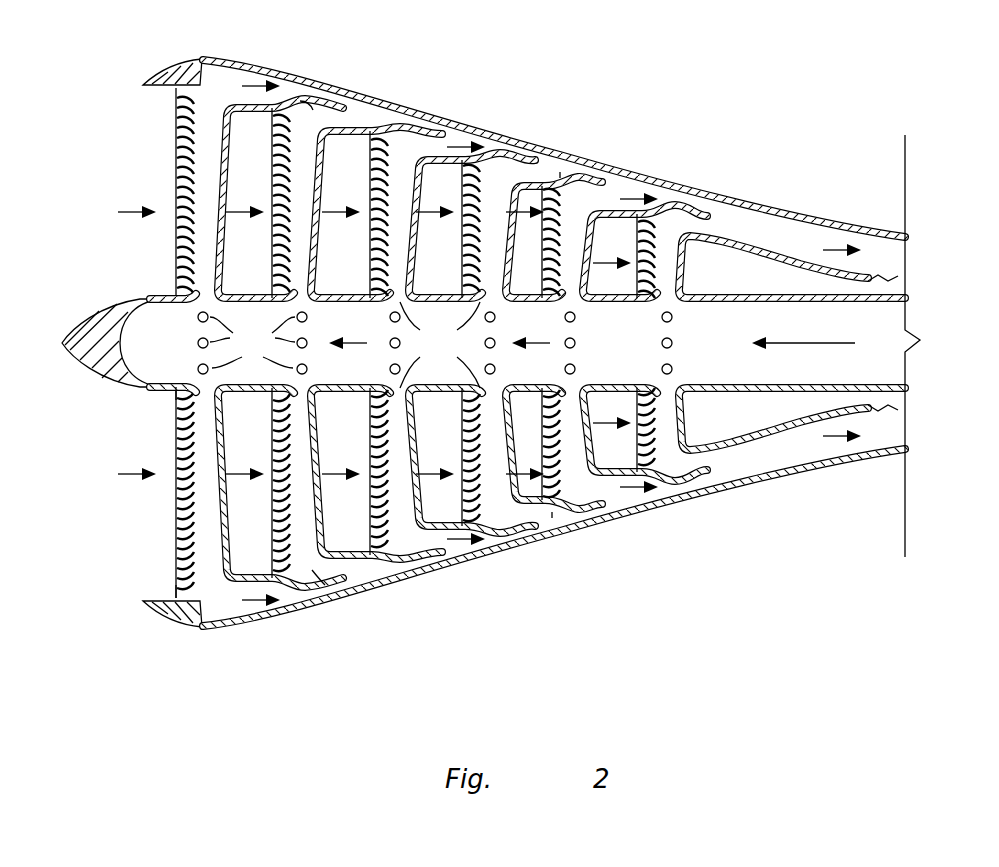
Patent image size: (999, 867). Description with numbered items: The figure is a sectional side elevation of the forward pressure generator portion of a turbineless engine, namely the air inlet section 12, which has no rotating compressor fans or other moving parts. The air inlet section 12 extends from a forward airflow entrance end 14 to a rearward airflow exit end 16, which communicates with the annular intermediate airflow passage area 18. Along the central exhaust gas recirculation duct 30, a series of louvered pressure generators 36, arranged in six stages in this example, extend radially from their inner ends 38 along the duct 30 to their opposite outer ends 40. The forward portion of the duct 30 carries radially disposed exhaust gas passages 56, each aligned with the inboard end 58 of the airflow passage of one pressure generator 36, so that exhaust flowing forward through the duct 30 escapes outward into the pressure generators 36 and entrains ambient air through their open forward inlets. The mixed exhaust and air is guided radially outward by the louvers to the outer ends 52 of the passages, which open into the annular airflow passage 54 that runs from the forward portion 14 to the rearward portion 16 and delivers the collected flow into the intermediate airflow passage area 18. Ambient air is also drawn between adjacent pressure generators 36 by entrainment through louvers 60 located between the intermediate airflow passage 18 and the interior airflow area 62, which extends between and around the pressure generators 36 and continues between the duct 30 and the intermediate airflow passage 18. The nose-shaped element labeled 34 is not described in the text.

The air inlet section 12 is at (316, 662).
The airflow entrance end 14 is at (170, 606).
The airflow exit end 16 is at (778, 478).
The intermediate airflow passage area 18 is at (847, 223).
The exhaust gas recirculation duct 30 is at (716, 348).
The nose 34 is at (162, 322).
The louvered pressure generator 36 is at (290, 132).
The inner end 38 is at (172, 389).
The outer end 40 is at (172, 587).
The outer end of airflow passage 52 is at (407, 147).
The annular airflow passage 54 is at (562, 175).
The exhaust gas passage 56 is at (252, 343).
The inboard end 58 is at (442, 345).
The louver 60 is at (893, 411).
The interior airflow area 62 is at (715, 243).